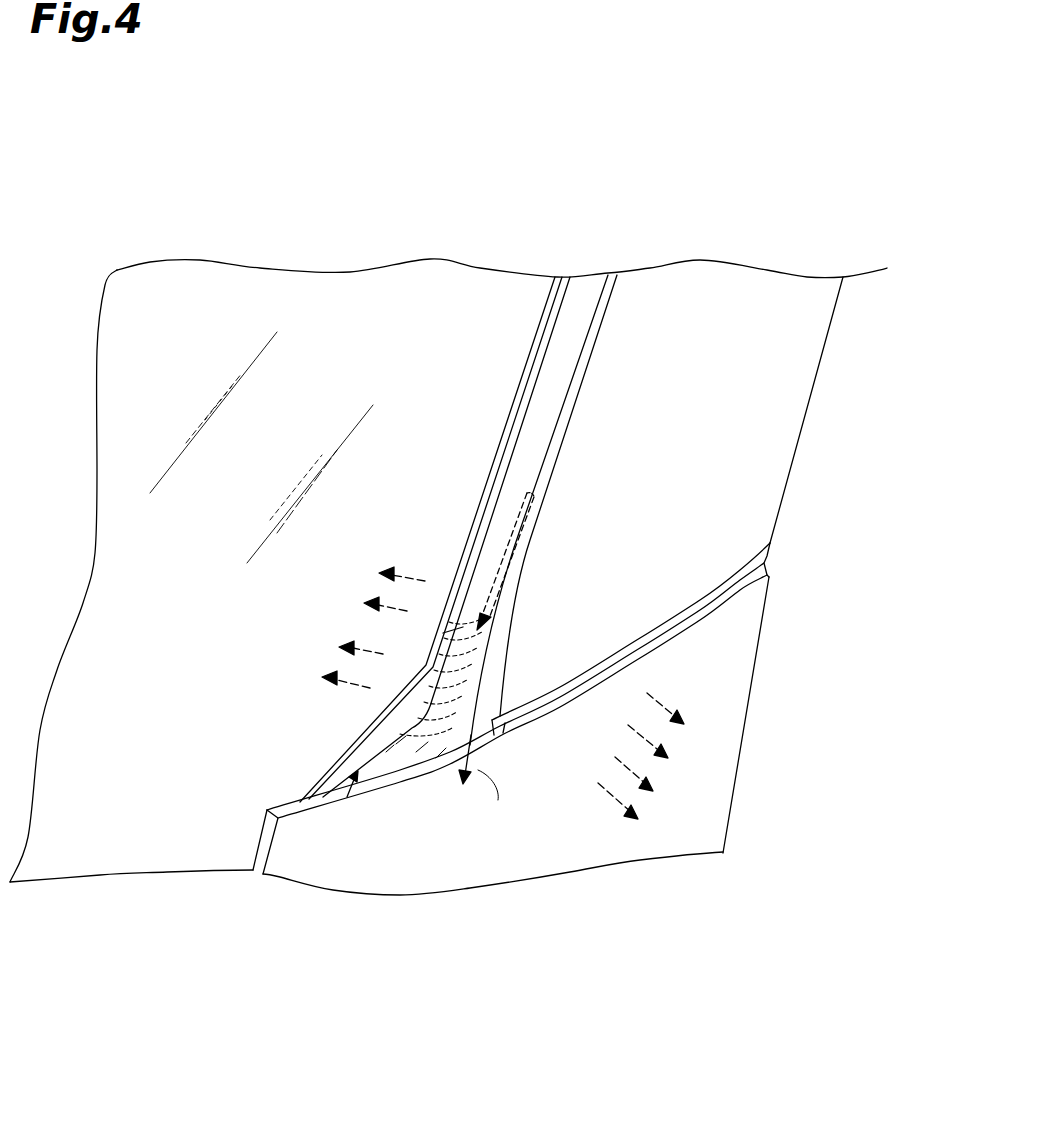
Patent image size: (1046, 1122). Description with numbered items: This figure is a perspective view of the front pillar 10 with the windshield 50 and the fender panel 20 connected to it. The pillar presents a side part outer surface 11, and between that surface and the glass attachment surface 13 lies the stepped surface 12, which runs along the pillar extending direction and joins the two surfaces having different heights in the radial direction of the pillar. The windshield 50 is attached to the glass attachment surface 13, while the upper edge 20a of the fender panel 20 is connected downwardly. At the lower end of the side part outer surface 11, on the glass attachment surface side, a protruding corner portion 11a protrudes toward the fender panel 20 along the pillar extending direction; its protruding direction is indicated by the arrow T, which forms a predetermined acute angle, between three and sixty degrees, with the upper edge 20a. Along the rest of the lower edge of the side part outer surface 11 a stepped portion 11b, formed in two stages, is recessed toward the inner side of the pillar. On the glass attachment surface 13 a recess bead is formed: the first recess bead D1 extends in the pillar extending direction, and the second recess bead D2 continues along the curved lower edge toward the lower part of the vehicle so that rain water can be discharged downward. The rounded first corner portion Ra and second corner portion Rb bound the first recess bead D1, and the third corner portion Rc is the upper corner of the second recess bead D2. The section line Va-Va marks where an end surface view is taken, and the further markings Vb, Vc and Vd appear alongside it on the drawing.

The front pillar 10 is at (832, 349).
The side part outer surface 11 is at (770, 446).
The protruding corner portion 11a is at (477, 727).
The stepped portion 11b is at (767, 563).
The stepped surface 12 is at (608, 274).
The glass attachment surface 13 is at (548, 394).
The fender panel 20 is at (717, 662).
The upper edge 20a is at (727, 598).
The windshield 50 is at (243, 297).
The first recess bead D1 is at (497, 597).
The second recess bead D2 is at (347, 797).
The arrow indicating protruding direction T is at (478, 770).
The first corner portion Ra is at (433, 745).
The second corner portion Rb is at (397, 686).
The third corner portion Rc is at (390, 707).
The section line Va- Va is at (530, 658).
The view direction b Vb is at (513, 689).
The view direction c Vc is at (490, 725).
The view direction d Vd is at (476, 757).